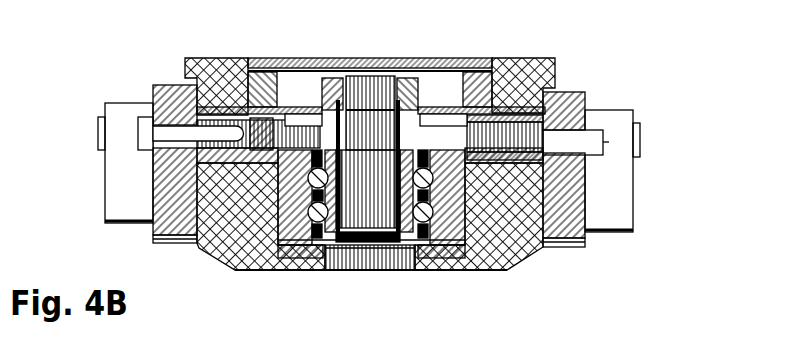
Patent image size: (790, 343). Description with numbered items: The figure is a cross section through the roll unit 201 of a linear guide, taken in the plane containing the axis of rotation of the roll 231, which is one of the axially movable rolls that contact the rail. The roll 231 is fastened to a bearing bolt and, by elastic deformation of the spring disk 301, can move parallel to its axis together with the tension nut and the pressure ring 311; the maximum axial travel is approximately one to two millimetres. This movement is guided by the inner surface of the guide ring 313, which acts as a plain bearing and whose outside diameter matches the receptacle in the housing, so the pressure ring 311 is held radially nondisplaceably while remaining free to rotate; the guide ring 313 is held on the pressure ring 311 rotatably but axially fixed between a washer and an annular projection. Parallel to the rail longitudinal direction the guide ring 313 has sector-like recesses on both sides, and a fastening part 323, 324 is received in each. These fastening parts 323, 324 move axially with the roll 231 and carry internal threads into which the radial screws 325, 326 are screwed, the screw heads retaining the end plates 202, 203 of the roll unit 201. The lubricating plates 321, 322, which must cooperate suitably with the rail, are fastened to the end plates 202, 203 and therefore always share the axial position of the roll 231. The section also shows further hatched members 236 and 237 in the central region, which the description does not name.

The roll unit 201 is at (630, 266).
The end plate 202 is at (153, 232).
The end plate 203 is at (583, 248).
The roll 231 is at (268, 273).
The rotor yoke 236 is at (247, 267).
The bottom hub 237 is at (363, 270).
The spring disk 301 is at (372, 306).
The pressure ring 311 is at (369, 72).
The guide ring 313 is at (232, 105).
The lubricating plate 321 is at (120, 210).
The lubricating plate 322 is at (625, 212).
The fastening part 323 is at (228, 120).
The fastening part 324 is at (527, 62).
The radial screw 325 is at (147, 103).
The radial screw 326 is at (587, 107).